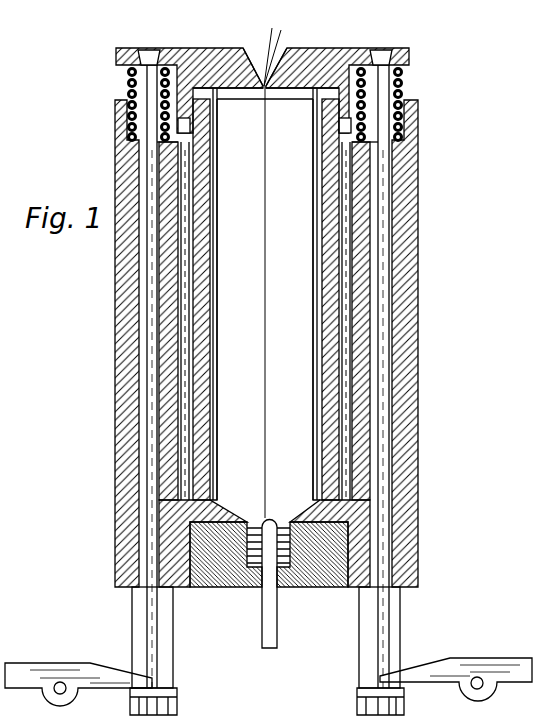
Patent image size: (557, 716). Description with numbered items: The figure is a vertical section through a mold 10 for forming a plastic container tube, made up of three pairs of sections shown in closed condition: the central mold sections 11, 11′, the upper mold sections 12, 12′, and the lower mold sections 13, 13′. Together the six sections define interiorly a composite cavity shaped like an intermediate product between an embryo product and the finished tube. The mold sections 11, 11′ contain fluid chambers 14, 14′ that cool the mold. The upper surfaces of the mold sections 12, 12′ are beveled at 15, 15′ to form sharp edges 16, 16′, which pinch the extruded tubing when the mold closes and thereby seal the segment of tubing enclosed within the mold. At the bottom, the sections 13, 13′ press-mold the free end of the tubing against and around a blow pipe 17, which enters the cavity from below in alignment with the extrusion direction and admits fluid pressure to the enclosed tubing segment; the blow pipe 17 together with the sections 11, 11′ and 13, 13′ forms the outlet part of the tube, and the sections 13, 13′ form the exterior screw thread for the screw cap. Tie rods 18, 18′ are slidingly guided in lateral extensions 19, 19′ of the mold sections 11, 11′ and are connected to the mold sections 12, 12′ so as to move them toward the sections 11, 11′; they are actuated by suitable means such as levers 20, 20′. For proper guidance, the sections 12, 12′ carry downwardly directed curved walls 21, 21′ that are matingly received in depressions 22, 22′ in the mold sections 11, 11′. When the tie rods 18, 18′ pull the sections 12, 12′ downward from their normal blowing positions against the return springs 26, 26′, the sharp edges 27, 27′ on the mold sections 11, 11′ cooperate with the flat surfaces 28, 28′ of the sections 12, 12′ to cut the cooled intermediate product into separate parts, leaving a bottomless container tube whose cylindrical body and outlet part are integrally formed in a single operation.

The mold 10 is at (438, 76).
The mold section 11 is at (205, 226).
The mold section 11′ is at (312, 299).
The mold section 12 is at (197, 62).
The mold section 12′ is at (337, 73).
The mold section 13 is at (225, 566).
The mold section 13′ is at (312, 573).
The fluid chamber 14 is at (182, 284).
The fluid chamber 14′ is at (316, 321).
The beveled upper surface 15 is at (254, 54).
The beveled upper surface 15′ is at (297, 54).
The sharp edge 16 is at (268, 62).
The sharp edge 16′ is at (288, 46).
The blow pipe 17 is at (280, 622).
The tie rod 18 is at (150, 330).
The tie rod 18′ is at (420, 376).
The lateral extension 19 is at (126, 382).
The lateral extension 19′ is at (420, 343).
The lever 20 is at (50, 668).
The lever 20′ is at (456, 663).
The downwardly directed curved wall 21 is at (165, 113).
The downwardly directed curved wall 21′ is at (411, 127).
The depression 22 is at (190, 128).
The depression 22′ is at (324, 161).
The return spring 26 is at (125, 72).
The return spring 26′ is at (418, 105).
The sharp edge 27 is at (237, 90).
The sharp edge 27′ is at (311, 294).
The flat surface 28 is at (265, 95).
The flat surface 28′ is at (302, 115).